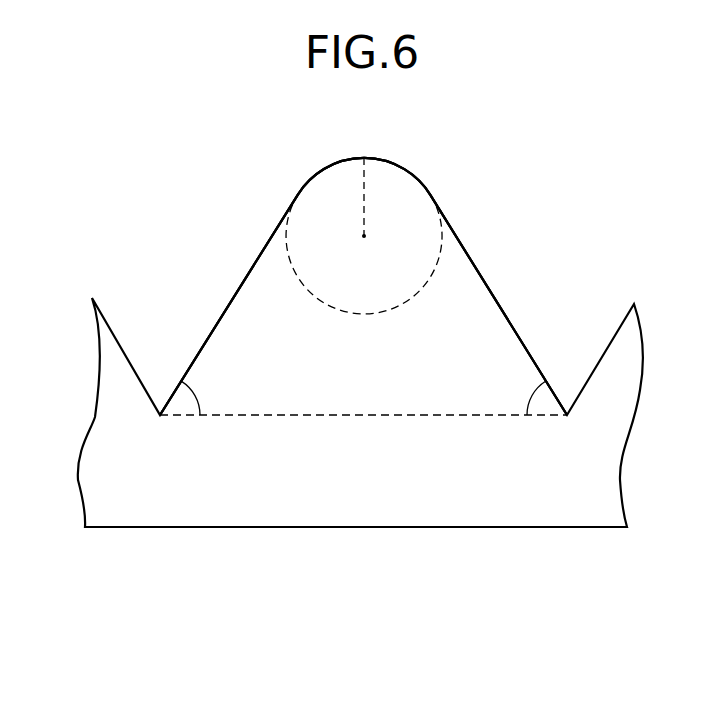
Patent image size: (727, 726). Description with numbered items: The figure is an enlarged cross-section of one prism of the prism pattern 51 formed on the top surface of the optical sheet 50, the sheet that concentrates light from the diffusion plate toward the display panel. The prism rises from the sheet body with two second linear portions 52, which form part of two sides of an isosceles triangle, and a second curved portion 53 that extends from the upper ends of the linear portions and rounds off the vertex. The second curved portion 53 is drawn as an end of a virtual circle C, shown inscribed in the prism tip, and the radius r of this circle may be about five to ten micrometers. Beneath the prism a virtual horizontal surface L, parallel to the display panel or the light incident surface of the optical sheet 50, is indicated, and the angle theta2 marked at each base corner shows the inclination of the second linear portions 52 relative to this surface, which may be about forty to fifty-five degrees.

The optical sheet 50 is at (367, 538).
The prism pattern 51 is at (473, 145).
The second linear portions 52 is at (463, 247).
The second curved portion 53 is at (432, 190).
The virtual circle C is at (427, 287).
The radius r is at (371, 198).
The virtual horizontal surface L is at (350, 415).
The inclination angle theta2 is at (363, 396).